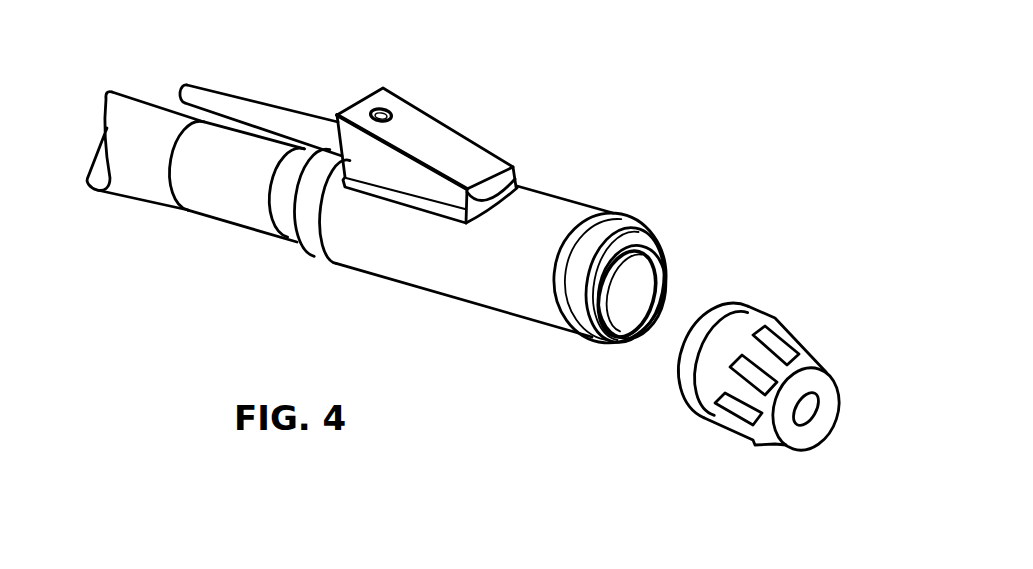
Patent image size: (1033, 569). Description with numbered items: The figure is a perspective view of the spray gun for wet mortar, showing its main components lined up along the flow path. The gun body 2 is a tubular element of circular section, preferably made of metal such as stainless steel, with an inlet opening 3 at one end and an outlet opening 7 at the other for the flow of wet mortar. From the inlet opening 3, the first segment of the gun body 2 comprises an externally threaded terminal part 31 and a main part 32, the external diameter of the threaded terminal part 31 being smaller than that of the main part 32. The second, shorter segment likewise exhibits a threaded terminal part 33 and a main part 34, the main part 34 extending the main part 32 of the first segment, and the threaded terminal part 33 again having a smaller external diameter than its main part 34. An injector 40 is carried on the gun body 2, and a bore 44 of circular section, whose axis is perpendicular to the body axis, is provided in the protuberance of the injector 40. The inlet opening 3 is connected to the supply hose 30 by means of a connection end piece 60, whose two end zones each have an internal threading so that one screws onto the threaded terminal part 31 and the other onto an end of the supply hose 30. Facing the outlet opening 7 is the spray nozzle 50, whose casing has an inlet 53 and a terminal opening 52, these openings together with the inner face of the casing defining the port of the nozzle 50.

The gun body 2 is at (425, 270).
The inlet opening 3 is at (622, 333).
The outlet opening 7 is at (653, 277).
The supply hose 30 is at (145, 170).
The threaded terminal part 31 is at (318, 237).
The main part 32 is at (515, 317).
The threaded terminal part 33 is at (592, 312).
The main part 34 is at (617, 228).
The injector 40 is at (227, 105).
The bore 44 is at (413, 128).
The spray nozzle 50 is at (767, 380).
The terminal opening 52 is at (805, 410).
The inlet 53 is at (737, 303).
The connection end piece 60 is at (245, 205).